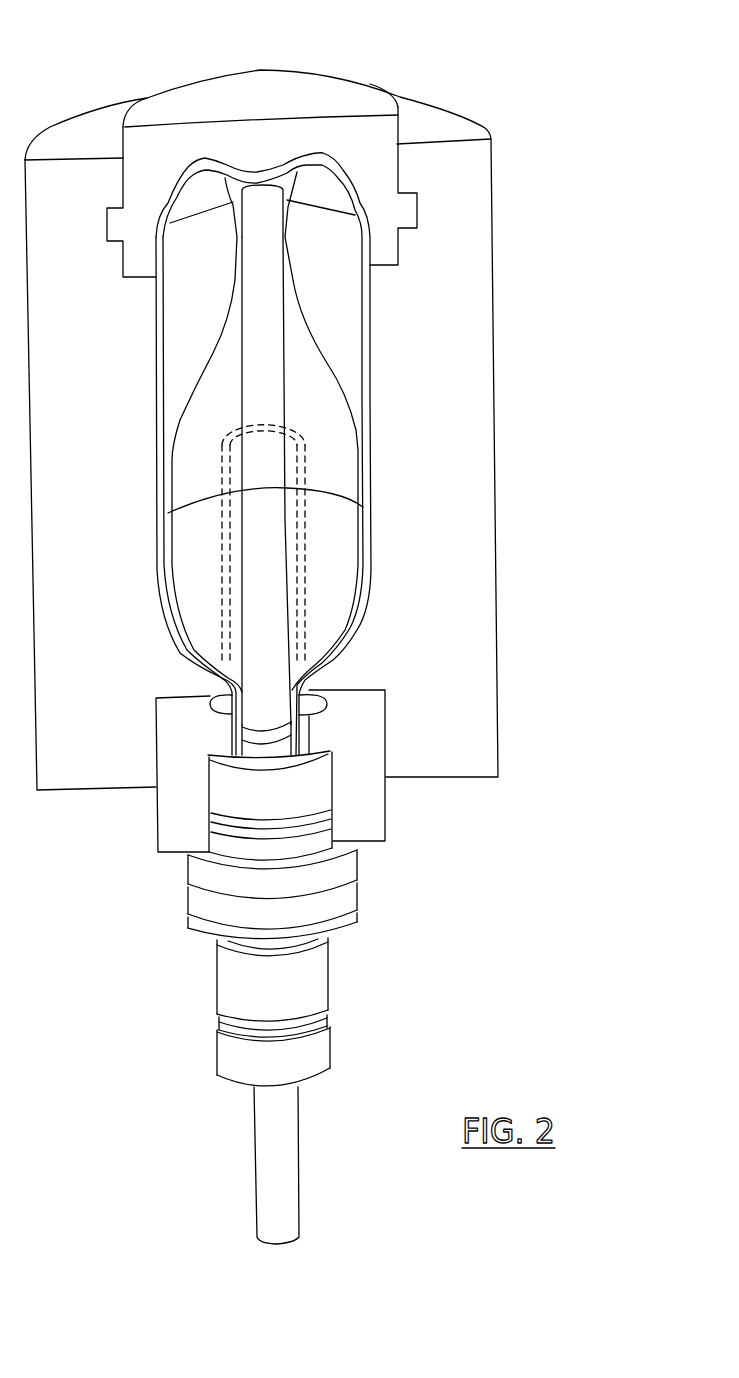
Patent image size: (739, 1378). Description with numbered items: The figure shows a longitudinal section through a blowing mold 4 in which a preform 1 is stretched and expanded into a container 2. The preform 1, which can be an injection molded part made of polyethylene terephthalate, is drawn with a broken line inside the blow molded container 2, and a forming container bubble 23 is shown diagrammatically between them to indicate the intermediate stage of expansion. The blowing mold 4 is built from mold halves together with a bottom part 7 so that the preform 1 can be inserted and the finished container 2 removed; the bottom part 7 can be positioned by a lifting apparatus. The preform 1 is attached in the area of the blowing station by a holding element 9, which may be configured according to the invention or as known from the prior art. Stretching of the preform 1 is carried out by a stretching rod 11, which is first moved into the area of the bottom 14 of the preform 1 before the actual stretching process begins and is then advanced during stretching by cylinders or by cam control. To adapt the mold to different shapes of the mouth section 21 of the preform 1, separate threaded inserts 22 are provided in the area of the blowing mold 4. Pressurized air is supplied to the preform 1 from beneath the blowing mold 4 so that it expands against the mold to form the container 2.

The preform 1 is at (300, 582).
The container 2 is at (368, 368).
The blowing mold 4 is at (455, 430).
The bottom part 7 is at (341, 84).
The holding element 9 is at (347, 913).
The stretching rod 11 is at (253, 1178).
The bottom 14 is at (293, 427).
The mouth section 21 is at (320, 717).
The threaded inserts 22 is at (383, 806).
The forming container bubble 23 is at (310, 330).